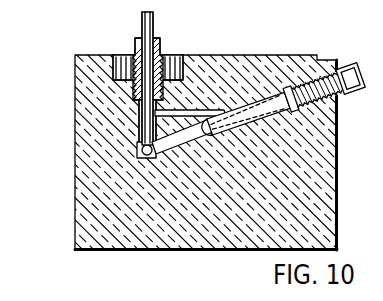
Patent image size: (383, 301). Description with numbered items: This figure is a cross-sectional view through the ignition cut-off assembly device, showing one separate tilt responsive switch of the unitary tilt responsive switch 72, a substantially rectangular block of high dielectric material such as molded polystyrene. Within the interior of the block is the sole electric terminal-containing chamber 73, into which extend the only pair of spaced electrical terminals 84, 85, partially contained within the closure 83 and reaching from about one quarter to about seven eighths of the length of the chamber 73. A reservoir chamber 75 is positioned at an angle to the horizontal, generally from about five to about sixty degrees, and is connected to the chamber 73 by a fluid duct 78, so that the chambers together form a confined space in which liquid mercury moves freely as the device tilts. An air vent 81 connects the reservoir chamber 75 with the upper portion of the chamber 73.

The tilt responsive switch 72 is at (74, 220).
The electric terminal-containing chamber 73 is at (137, 147).
The reservoir chamber 75 is at (275, 103).
The fluid duct 78 is at (179, 133).
The air vent 81 is at (208, 113).
The closure 83 is at (134, 45).
The electrical terminal 84 is at (154, 24).
The electrical terminal 85 is at (142, 27).